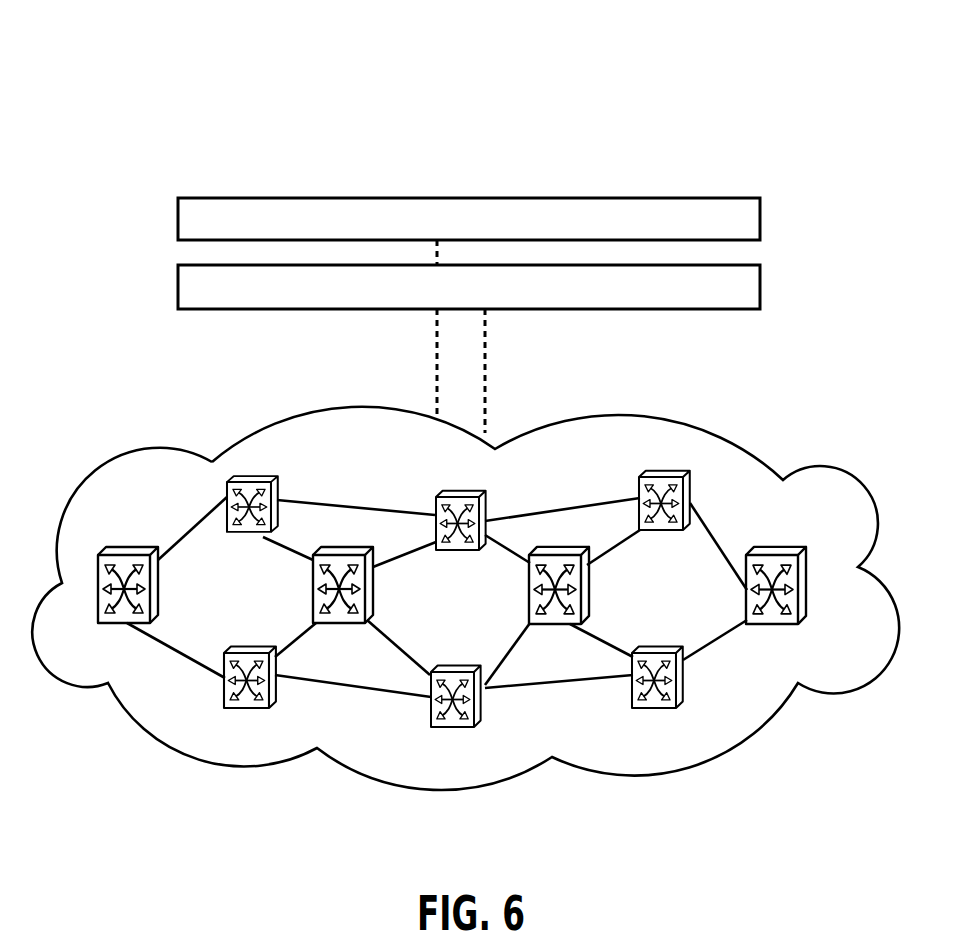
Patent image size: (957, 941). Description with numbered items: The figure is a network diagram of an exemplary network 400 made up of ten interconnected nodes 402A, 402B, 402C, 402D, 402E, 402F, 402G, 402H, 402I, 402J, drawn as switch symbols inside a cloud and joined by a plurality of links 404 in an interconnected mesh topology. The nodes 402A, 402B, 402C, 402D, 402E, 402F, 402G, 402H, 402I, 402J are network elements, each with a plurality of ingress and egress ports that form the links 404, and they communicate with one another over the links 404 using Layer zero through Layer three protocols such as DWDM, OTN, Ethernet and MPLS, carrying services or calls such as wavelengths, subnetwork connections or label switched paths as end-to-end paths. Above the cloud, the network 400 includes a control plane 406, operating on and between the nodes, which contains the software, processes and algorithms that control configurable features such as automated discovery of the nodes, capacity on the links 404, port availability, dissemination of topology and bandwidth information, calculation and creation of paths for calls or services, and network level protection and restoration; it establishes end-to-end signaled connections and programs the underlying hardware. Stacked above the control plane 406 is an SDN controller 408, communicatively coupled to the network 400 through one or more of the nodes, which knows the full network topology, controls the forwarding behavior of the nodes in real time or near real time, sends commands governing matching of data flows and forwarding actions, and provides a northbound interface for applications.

The network 400 is at (522, 110).
The links 404 is at (357, 504).
The control plane 406 is at (760, 282).
The SDN controller 408 is at (760, 213).
The node 402A is at (130, 551).
The node 402B is at (347, 625).
The node 402C is at (555, 625).
The node 402D is at (770, 625).
The node 402E is at (288, 454).
The node 402F is at (458, 552).
The node 402G is at (662, 530).
The node 402H is at (250, 648).
The node 402I is at (457, 667).
The node 402J is at (662, 650).